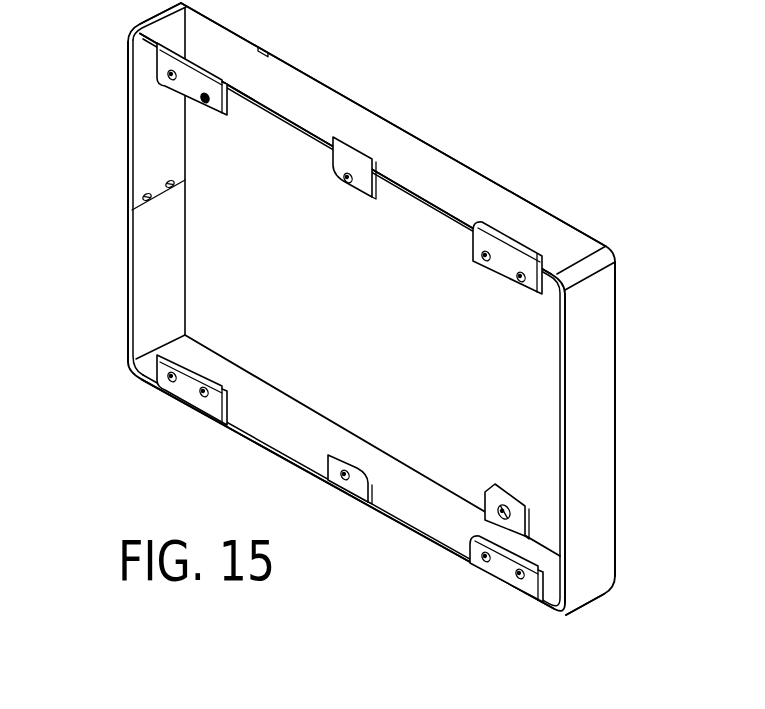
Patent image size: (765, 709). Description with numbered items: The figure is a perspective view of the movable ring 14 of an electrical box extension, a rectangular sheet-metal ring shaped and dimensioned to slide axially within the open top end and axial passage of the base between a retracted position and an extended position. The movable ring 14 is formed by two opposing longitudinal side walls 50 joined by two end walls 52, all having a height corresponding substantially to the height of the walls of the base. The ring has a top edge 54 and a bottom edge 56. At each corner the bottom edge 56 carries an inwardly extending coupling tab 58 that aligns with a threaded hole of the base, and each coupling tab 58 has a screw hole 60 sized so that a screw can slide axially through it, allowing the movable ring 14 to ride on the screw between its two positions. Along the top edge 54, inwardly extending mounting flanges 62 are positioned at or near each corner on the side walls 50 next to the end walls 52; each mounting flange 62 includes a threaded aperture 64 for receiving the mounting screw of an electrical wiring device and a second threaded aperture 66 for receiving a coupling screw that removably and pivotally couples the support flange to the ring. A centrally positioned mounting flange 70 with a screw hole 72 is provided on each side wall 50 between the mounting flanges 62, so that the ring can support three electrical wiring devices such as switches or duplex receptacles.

The movable ring 14 is at (128, 258).
The side walls 50 is at (458, 186).
The end walls 52 is at (153, 305).
The top edge 54 is at (410, 194).
The bottom edge 56 is at (537, 201).
The coupling tab 58 is at (510, 492).
The screw hole 60 is at (506, 509).
The mounting flange 62 is at (173, 96).
The threaded aperture 64 is at (200, 102).
The threaded aperture 66 is at (165, 76).
The centrally positioned mounting flange 70 is at (333, 168).
The screw hole 72 is at (352, 174).